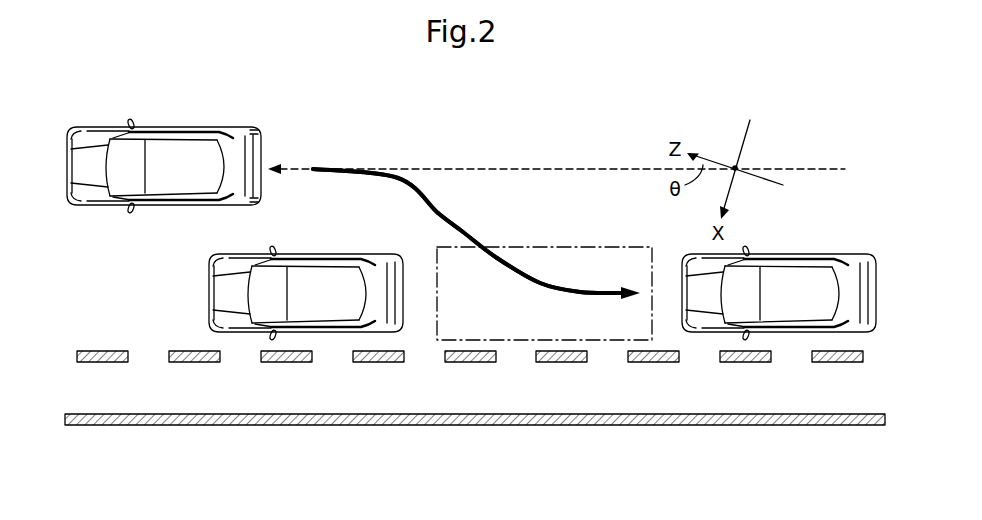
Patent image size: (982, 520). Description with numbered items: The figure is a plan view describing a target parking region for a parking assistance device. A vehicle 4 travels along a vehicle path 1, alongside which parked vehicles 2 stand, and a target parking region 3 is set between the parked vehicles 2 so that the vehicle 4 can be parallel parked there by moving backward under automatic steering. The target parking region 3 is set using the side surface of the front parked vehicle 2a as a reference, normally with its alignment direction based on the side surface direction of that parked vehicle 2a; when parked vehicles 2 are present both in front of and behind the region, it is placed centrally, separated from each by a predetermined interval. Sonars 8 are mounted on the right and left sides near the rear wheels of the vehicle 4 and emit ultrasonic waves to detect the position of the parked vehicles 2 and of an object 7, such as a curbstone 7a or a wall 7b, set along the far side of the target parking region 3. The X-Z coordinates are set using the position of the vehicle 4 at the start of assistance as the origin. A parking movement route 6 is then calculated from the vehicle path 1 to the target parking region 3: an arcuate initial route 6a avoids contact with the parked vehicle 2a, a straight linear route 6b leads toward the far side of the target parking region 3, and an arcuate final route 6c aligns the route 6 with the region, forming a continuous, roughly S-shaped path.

The vehicle path 1 is at (550, 151).
The parked vehicles 2 is at (803, 282).
The front parked vehicle 2a is at (220, 293).
The target parking region 3 is at (543, 247).
The vehicle 4 is at (190, 160).
The parking movement route 6 is at (440, 212).
The initial route 6a is at (398, 178).
The linear route 6b is at (460, 226).
The final route 6c is at (538, 286).
The object 7 is at (475, 426).
The curbstone 7a is at (313, 357).
The wall 7b is at (488, 427).
The sonar 8 is at (258, 130).